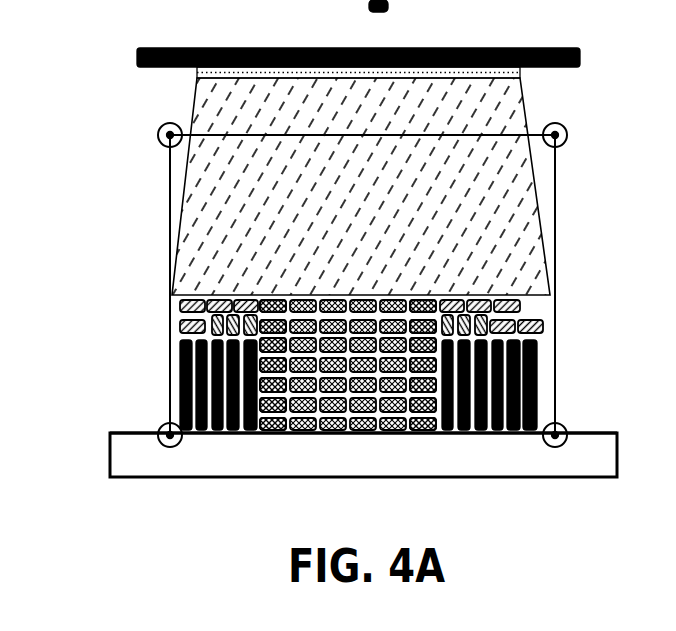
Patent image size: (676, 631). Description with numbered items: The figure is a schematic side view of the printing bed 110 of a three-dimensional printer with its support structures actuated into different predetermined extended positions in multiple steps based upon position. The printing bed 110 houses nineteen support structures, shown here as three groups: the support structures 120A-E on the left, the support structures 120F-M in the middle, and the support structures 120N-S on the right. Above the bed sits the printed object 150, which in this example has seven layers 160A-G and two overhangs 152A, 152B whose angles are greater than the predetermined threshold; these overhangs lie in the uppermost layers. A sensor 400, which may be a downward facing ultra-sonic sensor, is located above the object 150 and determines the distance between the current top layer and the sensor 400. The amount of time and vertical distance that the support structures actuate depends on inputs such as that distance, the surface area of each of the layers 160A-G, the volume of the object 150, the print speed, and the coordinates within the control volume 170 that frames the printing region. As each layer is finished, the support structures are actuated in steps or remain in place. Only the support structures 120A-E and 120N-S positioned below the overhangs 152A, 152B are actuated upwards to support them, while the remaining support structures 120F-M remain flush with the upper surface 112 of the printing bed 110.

The sensor 400 is at (522, 73).
The control volume 170 is at (563, 163).
The 3D object 150 is at (355, 268).
The overhang 152A is at (238, 291).
The overhang 152B is at (481, 288).
The layers 160A-G is at (578, 298).
The support structures 120A-E is at (258, 443).
The support structures 120F-M is at (436, 443).
The support structures 120N-S is at (538, 443).
The printing bed 110 is at (112, 458).
The upper surface 112 is at (135, 432).